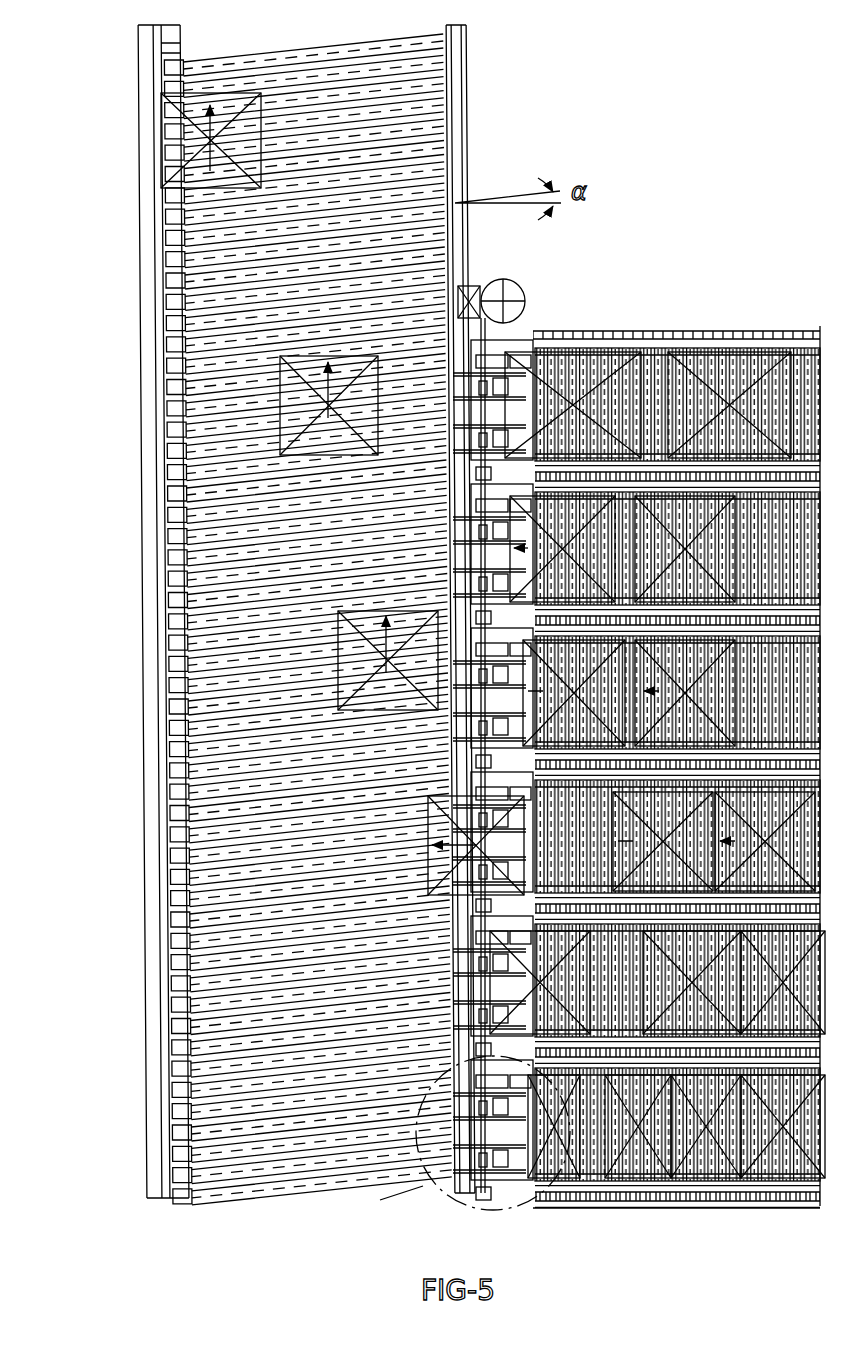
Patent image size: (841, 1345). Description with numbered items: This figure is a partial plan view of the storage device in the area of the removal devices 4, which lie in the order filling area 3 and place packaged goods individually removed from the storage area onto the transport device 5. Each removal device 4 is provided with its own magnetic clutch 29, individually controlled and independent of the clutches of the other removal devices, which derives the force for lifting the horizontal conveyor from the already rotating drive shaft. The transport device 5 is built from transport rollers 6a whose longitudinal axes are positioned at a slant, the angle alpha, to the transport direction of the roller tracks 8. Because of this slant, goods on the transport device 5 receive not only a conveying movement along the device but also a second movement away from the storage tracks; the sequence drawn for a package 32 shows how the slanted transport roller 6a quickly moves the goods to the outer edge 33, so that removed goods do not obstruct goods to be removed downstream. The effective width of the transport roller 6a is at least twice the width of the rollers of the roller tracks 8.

The order filling area 3 is at (745, 310).
The removal device 4 is at (492, 1174).
The transport device 5 is at (316, 648).
The transport roller 6a is at (403, 100).
The roller track 8 is at (648, 350).
The magnetic clutch 29 is at (488, 340).
The package 32 is at (165, 175).
The outer edge 33 is at (168, 986).